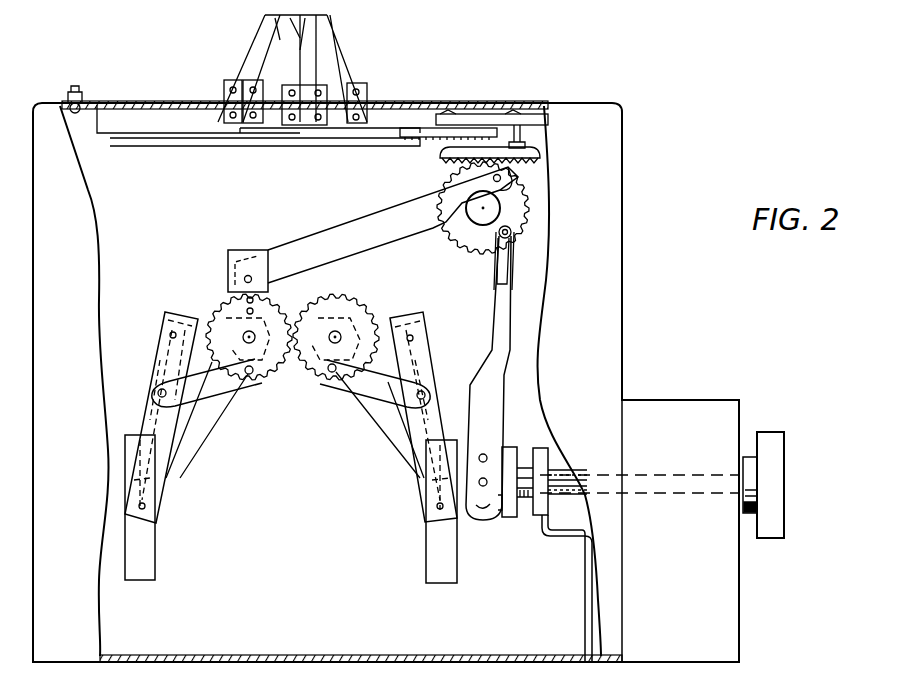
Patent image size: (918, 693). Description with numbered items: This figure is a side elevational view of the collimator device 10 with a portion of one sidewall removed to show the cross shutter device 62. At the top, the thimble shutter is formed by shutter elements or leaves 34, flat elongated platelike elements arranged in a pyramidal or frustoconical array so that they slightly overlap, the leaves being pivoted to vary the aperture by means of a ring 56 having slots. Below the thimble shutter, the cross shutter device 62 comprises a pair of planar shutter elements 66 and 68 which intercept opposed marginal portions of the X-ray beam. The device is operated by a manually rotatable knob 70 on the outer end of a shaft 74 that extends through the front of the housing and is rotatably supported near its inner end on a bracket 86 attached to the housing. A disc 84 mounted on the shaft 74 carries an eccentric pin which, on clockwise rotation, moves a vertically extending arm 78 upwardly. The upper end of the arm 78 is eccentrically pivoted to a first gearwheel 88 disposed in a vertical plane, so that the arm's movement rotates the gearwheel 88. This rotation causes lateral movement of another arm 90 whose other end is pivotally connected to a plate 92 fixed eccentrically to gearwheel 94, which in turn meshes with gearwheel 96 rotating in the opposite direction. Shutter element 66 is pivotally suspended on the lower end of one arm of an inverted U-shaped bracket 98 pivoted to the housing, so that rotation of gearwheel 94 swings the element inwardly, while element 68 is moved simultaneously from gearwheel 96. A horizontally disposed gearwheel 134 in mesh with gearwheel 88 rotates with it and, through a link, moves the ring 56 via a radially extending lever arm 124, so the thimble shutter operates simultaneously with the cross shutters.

The device 10 is at (630, 250).
The shutter elements or leaves 34 is at (270, 60).
The ring 56 is at (412, 128).
The cross shutter device 62 is at (197, 593).
The planar shutter element 66 is at (152, 550).
The planar shutter element 68 is at (428, 550).
The manually rotatable knob 70 is at (786, 473).
The shaft 74 is at (563, 476).
The vertically extending arm 78 is at (500, 404).
The disc 84 is at (512, 518).
The bracket 86 is at (568, 536).
The first gearwheel 88 is at (463, 252).
The arm 90 is at (332, 237).
The plate 92 is at (238, 250).
The gearwheel 94 is at (228, 305).
The gearwheel 96 is at (366, 312).
The inverted U-shaped bracket 98 is at (162, 350).
The lever arm 124 is at (458, 128).
The gearwheel 134 is at (444, 160).